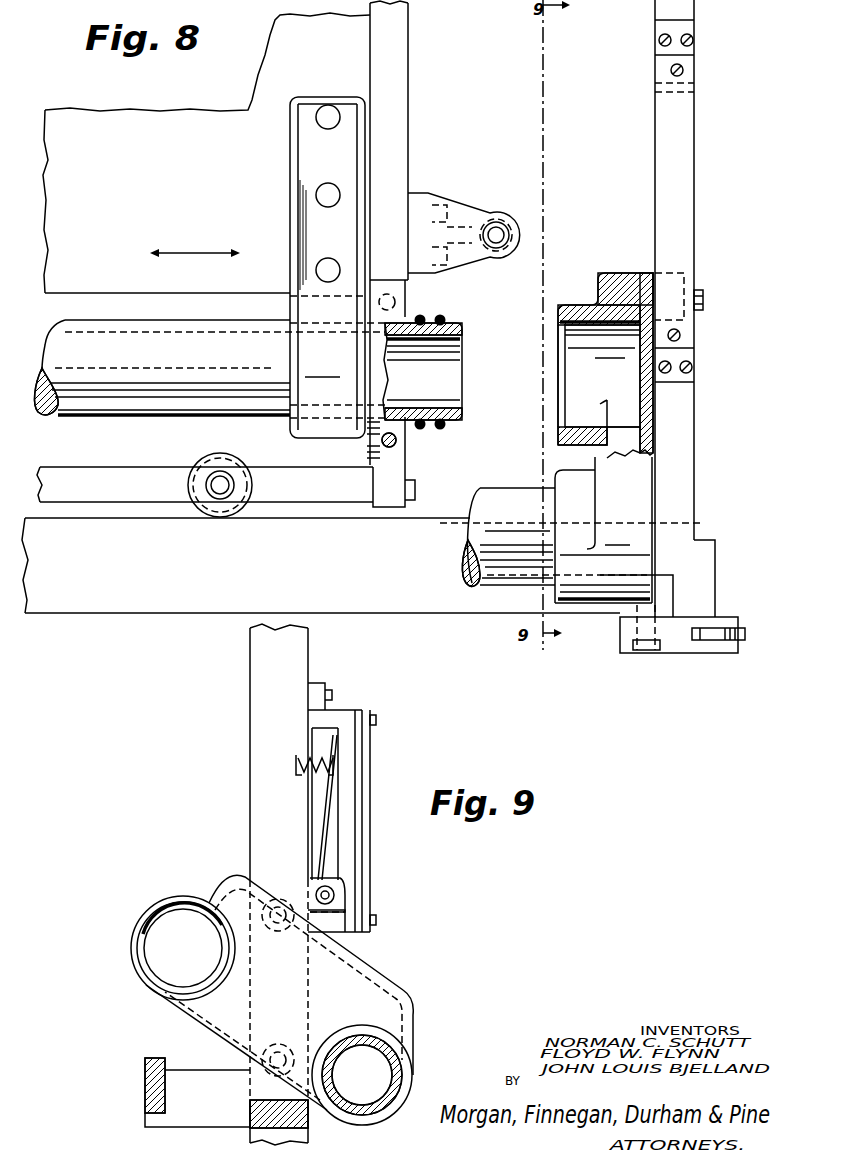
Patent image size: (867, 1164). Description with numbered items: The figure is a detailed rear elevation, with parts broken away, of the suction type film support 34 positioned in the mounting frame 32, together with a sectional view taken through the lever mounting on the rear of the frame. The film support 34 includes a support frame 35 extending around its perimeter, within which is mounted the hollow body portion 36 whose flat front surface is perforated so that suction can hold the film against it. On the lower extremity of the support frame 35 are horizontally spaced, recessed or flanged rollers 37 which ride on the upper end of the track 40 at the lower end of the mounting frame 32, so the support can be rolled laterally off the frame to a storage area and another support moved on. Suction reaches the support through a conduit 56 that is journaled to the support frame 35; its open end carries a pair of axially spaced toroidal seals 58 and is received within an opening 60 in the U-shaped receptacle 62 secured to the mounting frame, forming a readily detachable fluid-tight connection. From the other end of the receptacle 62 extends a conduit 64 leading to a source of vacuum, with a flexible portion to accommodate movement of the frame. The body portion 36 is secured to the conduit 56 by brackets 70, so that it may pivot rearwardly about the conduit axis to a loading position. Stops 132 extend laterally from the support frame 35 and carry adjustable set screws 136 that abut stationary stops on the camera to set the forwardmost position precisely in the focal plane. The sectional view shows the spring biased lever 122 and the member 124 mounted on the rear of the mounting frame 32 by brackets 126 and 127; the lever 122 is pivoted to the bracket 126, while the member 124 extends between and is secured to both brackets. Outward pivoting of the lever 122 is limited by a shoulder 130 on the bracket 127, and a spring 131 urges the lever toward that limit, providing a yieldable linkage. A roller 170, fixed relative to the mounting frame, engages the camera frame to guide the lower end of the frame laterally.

In FIG. 8, the mounting frame 32 is at (706, 125).
In FIG. 9, the mounting frame 32 is at (242, 689).
In FIG. 8, the suction type film support 34 is at (418, 97).
In FIG. 8, the support frame 35 is at (401, 45).
In FIG. 8, the hollow body portion 36 is at (144, 135).
In FIG. 8, the rollers 37 is at (224, 452).
In FIG. 8, the track 40 is at (101, 548).
In FIG. 9, the track 40 is at (155, 1057).
In FIG. 8, the conduit 56 is at (162, 413).
In FIG. 8, the toroidal seals 58 is at (441, 315).
In FIG. 8, the opening 60 is at (581, 330).
In FIG. 9, the opening 60 is at (160, 950).
In FIG. 8, the U-shaped receptacle 62 is at (627, 274).
In FIG. 9, the U-shaped receptacle 62 is at (212, 881).
In FIG. 8, the conduit 64 is at (494, 492).
In FIG. 9, the conduit 64 is at (398, 1052).
In FIG. 8, the brackets 70 is at (323, 220).
In FIG. 9, the spring biased lever 122 is at (336, 790).
In FIG. 8, the member 124 is at (680, 180).
In FIG. 9, the member 124 is at (366, 840).
In FIG. 8, the bracket 126 is at (686, 355).
In FIG. 9, the bracket 126 is at (340, 922).
In FIG. 8, the bracket 127 is at (696, 50).
In FIG. 9, the bracket 127 is at (326, 708).
In FIG. 9, the shoulder 130 is at (352, 712).
In FIG. 9, the spring 131 is at (322, 752).
In FIG. 8, the stops 132 is at (462, 206).
In FIG. 8, the adjustable set screws 136 is at (499, 225).
In FIG. 8, the roller 170 is at (745, 642).